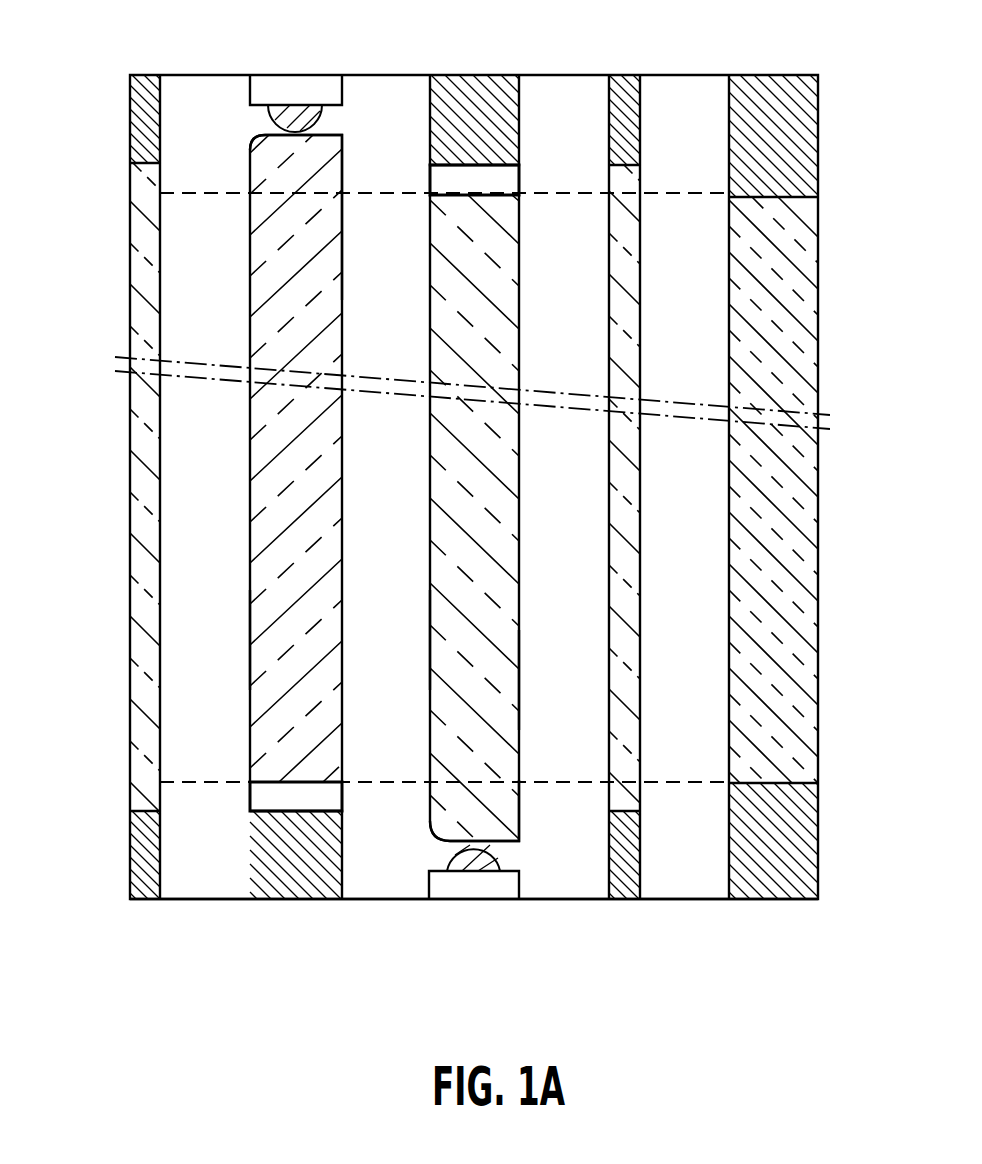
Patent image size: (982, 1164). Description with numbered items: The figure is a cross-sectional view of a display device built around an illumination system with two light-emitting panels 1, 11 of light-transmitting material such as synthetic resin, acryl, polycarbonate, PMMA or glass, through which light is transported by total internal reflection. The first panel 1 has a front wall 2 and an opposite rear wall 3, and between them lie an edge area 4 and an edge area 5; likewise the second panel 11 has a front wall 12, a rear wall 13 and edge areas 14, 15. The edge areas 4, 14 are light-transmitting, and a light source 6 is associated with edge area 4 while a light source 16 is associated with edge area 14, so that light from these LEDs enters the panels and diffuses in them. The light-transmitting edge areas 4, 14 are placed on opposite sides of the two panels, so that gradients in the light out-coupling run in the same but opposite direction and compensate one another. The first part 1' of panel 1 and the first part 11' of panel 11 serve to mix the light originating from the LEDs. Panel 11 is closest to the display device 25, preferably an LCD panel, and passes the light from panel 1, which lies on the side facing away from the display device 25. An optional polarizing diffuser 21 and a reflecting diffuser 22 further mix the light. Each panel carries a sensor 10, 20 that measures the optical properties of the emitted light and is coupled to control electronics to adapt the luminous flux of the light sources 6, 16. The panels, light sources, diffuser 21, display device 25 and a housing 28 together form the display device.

The light-emitting panel 1 is at (317, 458).
The first part of the light-emitting panel 1' is at (327, 167).
The front wall 2 is at (343, 250).
The rear wall 3 is at (250, 640).
The light-transmitting edge area 4 is at (250, 142).
The edge area 5 is at (317, 777).
The light source 6 is at (283, 115).
The sensor 10 is at (272, 800).
The light-emitting panel 11 is at (507, 518).
The first part of the light-emitting panel 11' is at (521, 810).
The front wall 12 is at (521, 683).
The rear wall 13 is at (429, 642).
The light-transmitting edge area 14 is at (430, 822).
The edge area 15 is at (495, 198).
The light source 16 is at (463, 865).
The sensor 20 is at (455, 178).
The polarizing diffuser 21 is at (625, 260).
The reflecting diffuser 22 is at (145, 268).
The display device 25 is at (797, 325).
The housing 28 is at (683, 900).